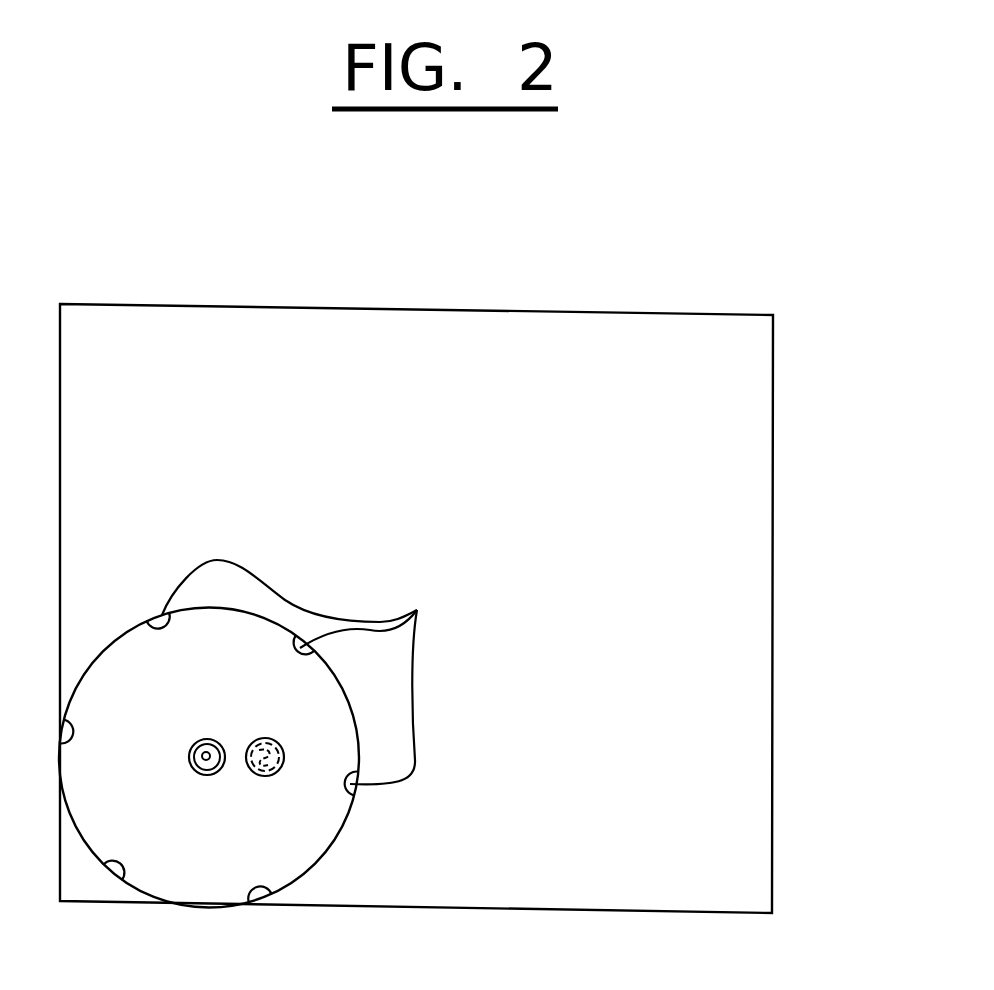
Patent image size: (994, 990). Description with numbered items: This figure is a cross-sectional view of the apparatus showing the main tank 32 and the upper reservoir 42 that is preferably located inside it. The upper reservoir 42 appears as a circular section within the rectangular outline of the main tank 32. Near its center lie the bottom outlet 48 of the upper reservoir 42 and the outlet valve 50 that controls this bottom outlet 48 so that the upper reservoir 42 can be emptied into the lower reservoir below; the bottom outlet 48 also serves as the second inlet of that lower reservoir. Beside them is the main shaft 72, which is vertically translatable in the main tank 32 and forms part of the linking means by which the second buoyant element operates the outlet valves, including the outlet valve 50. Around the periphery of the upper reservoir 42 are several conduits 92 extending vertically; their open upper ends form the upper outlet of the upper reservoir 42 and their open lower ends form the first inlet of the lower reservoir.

The main tank 32 is at (758, 460).
The upper reservoir 42 is at (175, 882).
The bottom outlet 48 is at (265, 740).
The outlet valve 50 is at (269, 771).
The main shaft 72 is at (203, 752).
The conduits 92 is at (262, 731).